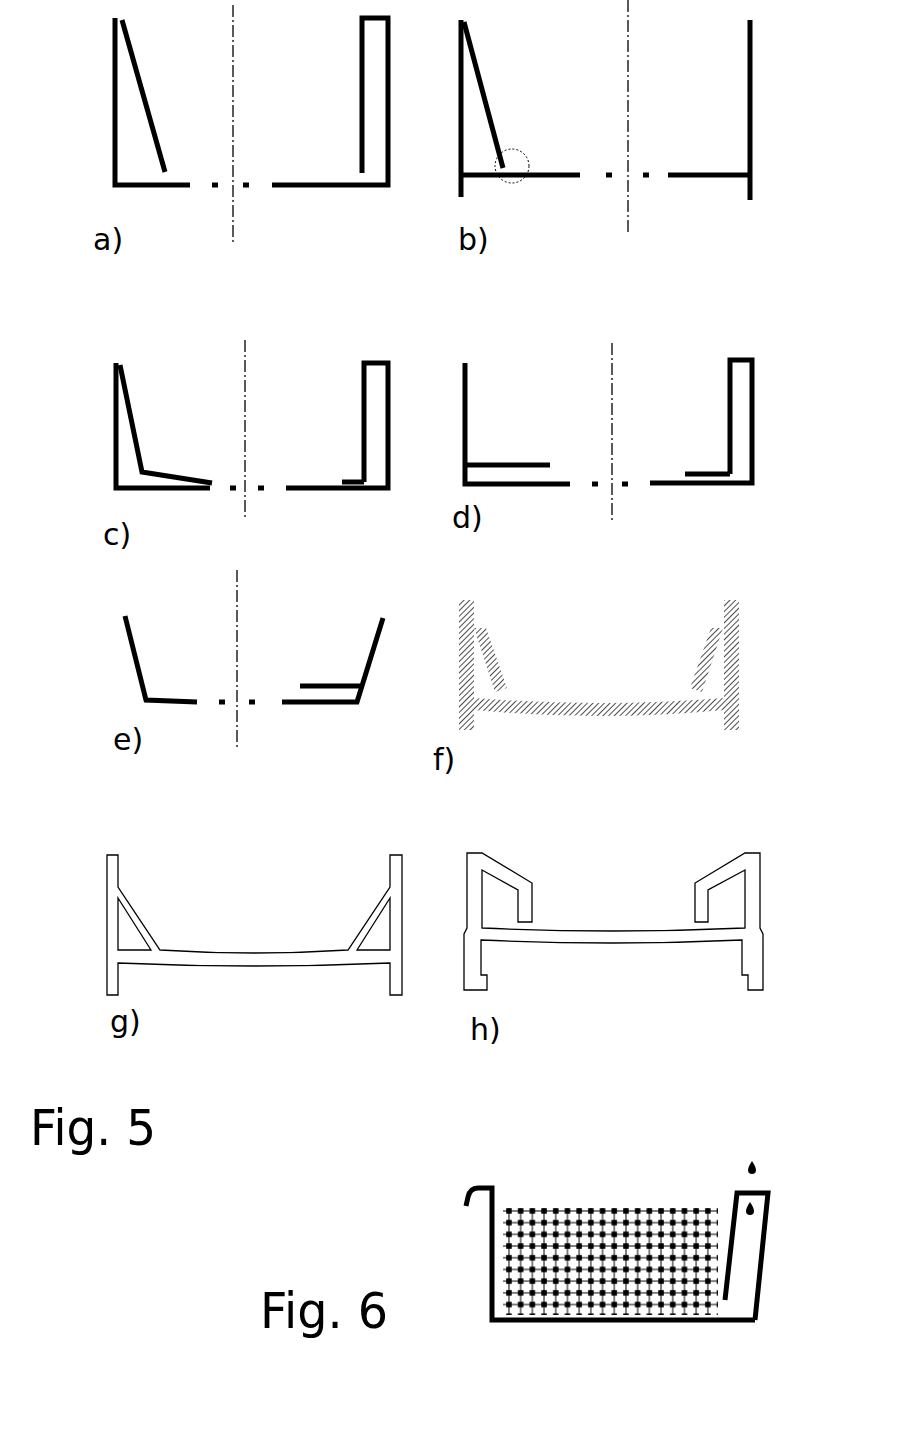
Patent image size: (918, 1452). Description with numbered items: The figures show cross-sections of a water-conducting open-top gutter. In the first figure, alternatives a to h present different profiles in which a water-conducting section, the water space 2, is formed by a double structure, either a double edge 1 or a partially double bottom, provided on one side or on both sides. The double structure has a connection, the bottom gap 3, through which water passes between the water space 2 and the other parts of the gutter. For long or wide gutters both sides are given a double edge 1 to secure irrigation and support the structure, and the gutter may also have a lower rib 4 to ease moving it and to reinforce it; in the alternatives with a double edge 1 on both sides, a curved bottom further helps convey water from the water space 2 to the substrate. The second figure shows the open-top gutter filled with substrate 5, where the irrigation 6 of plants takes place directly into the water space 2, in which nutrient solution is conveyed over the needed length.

In FIG. 5, the double edge 1 is at (145, 68).
In FIG. 5, the water space 2 is at (140, 146).
In FIG. 6, the water space 2 is at (748, 1245).
In FIG. 5, the bottom gap 3 is at (520, 162).
In FIG. 5, the lower rib 4 is at (745, 190).
In FIG. 6, the substrate 5 is at (570, 1303).
In FIG. 6, the irrigation 6 is at (748, 1162).